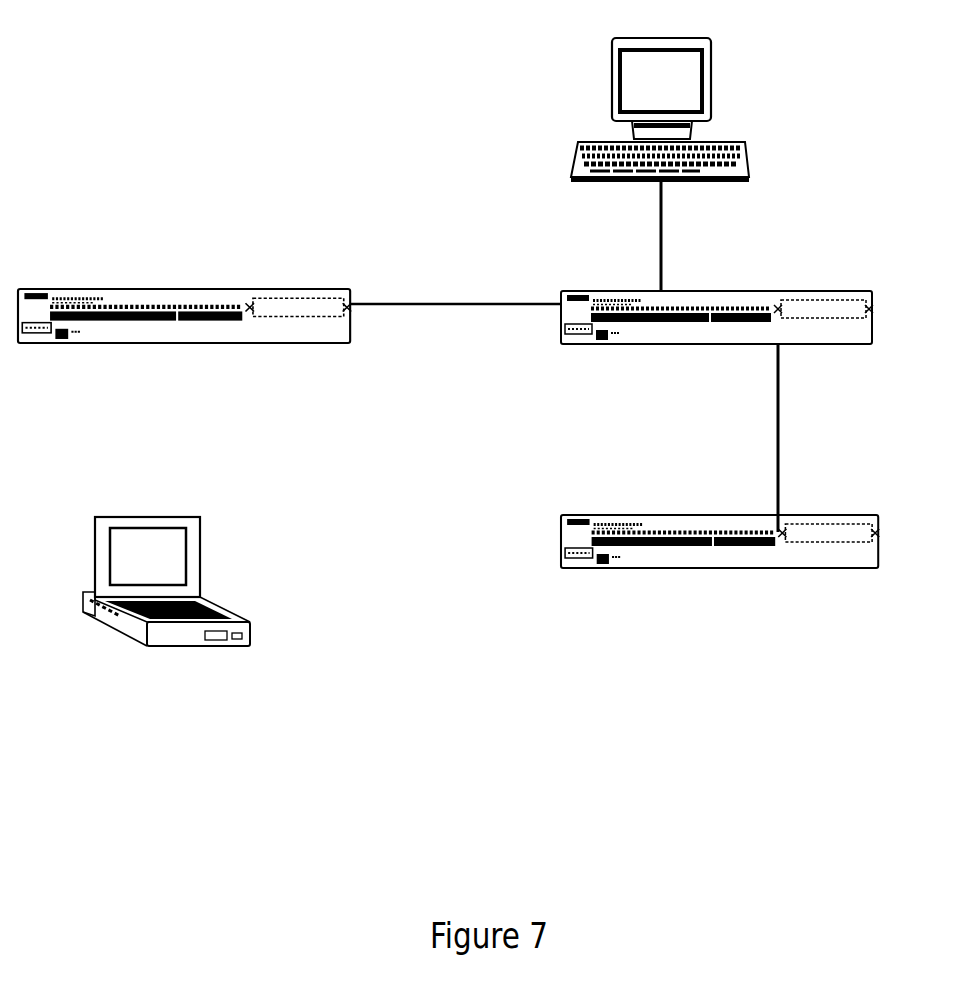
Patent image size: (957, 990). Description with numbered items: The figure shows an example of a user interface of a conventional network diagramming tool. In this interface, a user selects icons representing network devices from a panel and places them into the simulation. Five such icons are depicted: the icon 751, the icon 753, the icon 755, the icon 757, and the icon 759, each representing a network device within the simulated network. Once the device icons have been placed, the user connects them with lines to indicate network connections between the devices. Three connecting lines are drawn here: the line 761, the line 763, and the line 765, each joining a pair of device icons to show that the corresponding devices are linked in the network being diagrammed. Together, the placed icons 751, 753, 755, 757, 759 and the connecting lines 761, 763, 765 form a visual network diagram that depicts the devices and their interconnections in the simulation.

The icon 751 is at (716, 74).
The icon 753 is at (172, 290).
The icon 755 is at (812, 290).
The icon 757 is at (680, 515).
The icon 759 is at (203, 570).
The line 761 is at (444, 312).
The line 763 is at (780, 441).
The line 765 is at (663, 241).